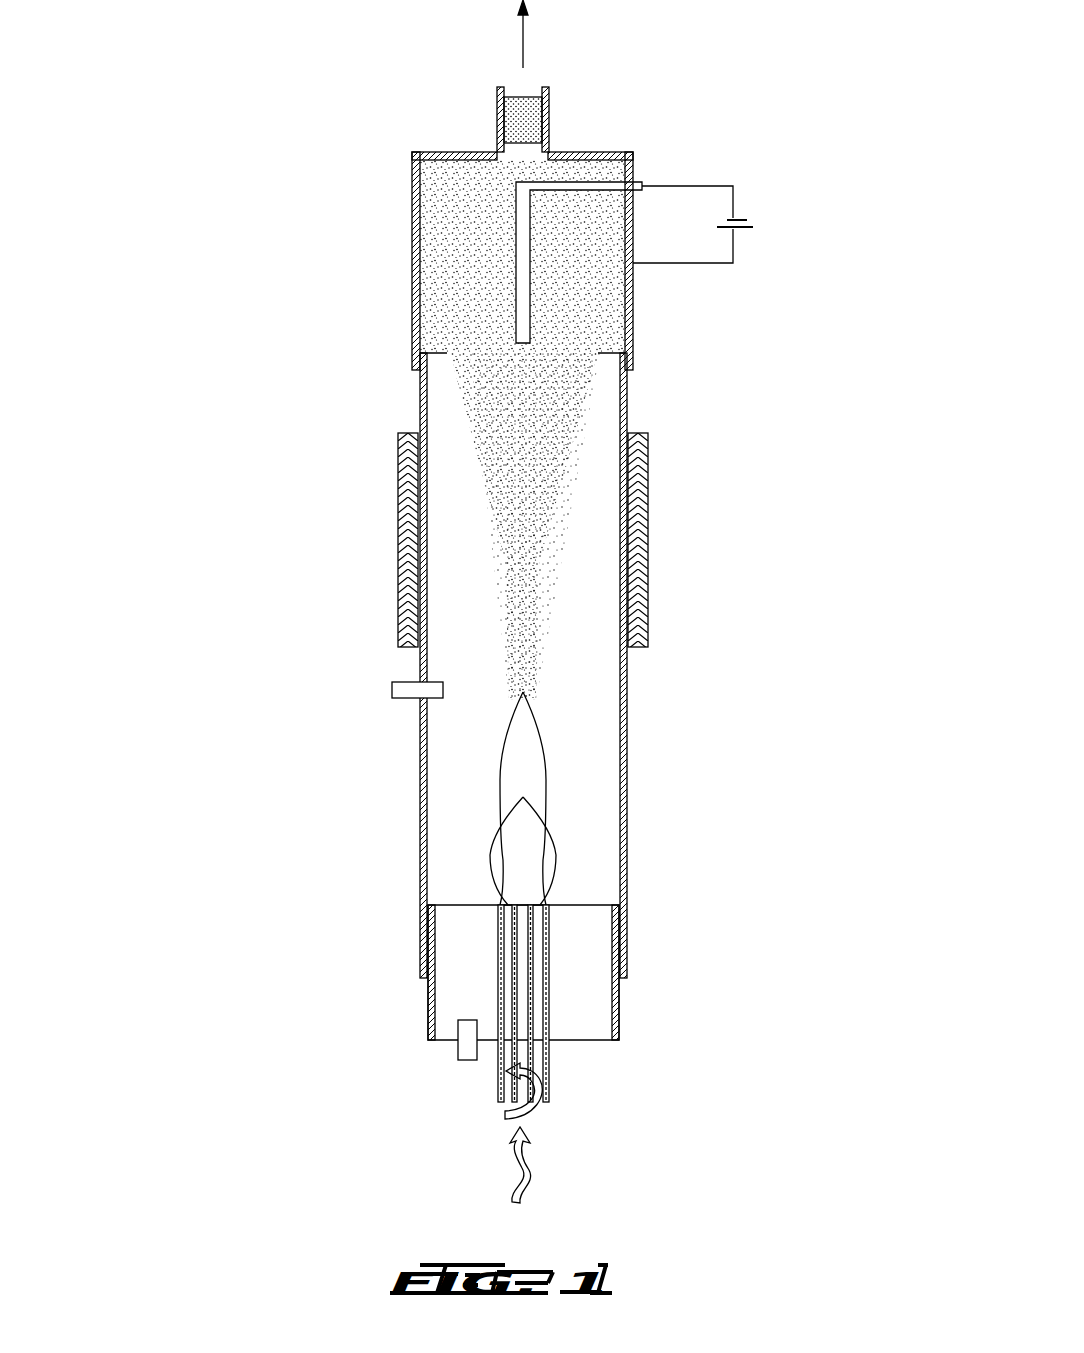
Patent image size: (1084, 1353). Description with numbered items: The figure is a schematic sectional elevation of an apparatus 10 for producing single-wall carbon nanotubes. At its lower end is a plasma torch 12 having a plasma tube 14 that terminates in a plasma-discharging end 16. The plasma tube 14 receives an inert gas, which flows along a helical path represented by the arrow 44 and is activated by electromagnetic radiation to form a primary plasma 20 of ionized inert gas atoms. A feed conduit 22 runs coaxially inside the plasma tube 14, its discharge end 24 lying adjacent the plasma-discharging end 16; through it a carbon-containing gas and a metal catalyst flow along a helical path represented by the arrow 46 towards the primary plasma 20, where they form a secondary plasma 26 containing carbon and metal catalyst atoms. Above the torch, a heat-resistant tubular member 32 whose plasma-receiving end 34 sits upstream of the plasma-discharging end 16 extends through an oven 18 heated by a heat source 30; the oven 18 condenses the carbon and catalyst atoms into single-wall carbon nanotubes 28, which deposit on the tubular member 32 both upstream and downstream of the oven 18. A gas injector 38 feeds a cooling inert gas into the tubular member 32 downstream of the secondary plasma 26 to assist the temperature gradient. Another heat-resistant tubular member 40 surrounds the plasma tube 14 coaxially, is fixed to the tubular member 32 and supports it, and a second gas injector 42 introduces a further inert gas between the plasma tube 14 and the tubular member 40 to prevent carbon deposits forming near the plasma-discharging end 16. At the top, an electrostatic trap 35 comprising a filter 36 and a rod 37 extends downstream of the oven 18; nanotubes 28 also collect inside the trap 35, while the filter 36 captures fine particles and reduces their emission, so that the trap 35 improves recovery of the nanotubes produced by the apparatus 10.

The apparatus 10 is at (342, 420).
The plasma torch 12 is at (504, 1008).
The plasma tube 14 is at (503, 907).
The plasma-discharging end 16 is at (498, 922).
The oven 18 is at (574, 540).
The primary plasma 20 is at (552, 840).
The feed conduit 22 is at (532, 980).
The discharge end 24 is at (523, 908).
The secondary plasma 26 is at (523, 738).
The single-wall carbon nanotubes 28 is at (463, 277).
The heat source 30 is at (648, 548).
The heat-resistant tubular member 32 is at (540, 665).
The plasma-receiving end 34 is at (423, 930).
The electrostatic trap 35 is at (405, 195).
The filter 36 is at (516, 116).
The rod 37 is at (523, 303).
The gas injector 38 is at (405, 690).
The heat-resistant tubular member 40 is at (430, 1003).
The gas injector 42 is at (463, 1047).
The arrow 44 is at (512, 1115).
The arrow 46 is at (532, 1148).